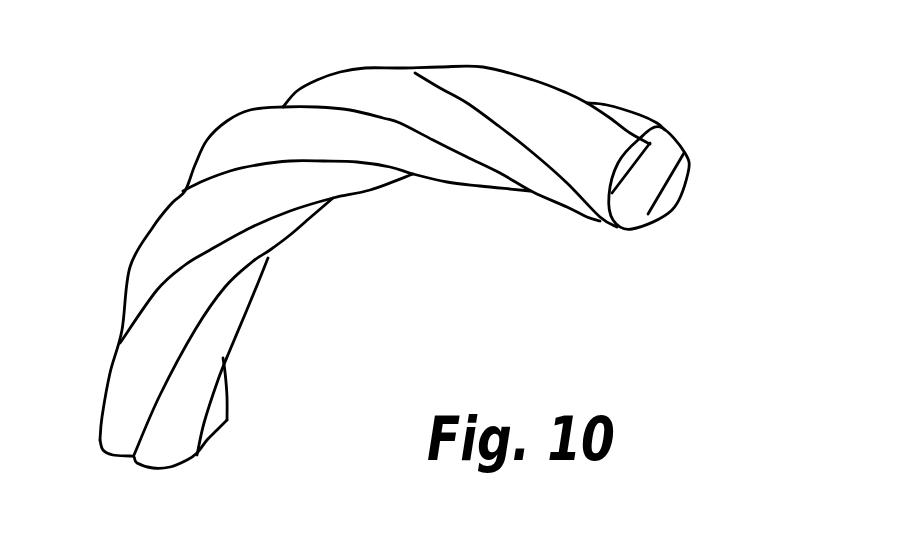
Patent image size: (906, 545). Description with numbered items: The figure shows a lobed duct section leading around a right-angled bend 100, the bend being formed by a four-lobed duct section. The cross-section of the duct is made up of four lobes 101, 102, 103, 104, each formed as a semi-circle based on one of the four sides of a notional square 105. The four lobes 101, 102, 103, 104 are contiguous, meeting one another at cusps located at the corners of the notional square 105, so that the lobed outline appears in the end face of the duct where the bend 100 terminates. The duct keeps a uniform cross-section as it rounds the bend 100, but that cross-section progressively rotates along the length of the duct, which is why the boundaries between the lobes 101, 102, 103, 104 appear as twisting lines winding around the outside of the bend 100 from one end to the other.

The right-angled bend 100 is at (363, 205).
The lobe 101 is at (177, 231).
The lobe 102 is at (453, 155).
The lobe 103 is at (332, 85).
The lobe 104 is at (557, 107).
The notional square 105 is at (668, 158).